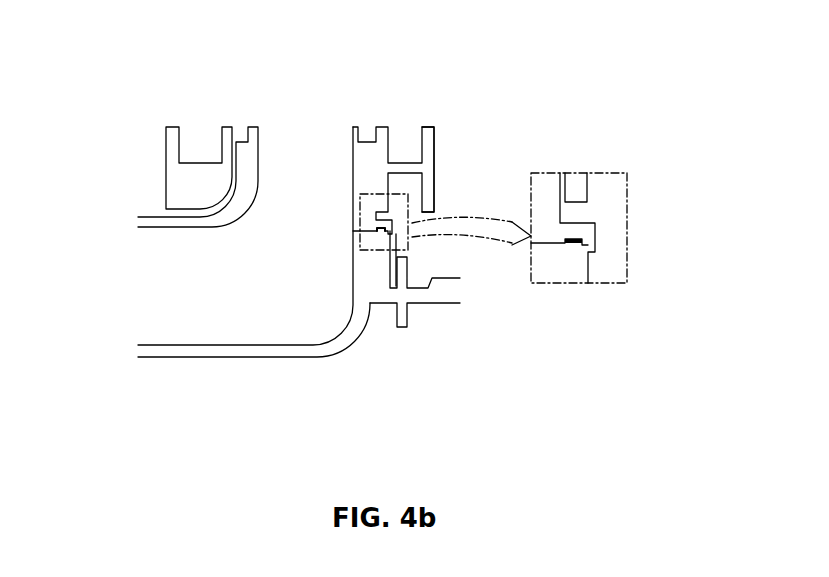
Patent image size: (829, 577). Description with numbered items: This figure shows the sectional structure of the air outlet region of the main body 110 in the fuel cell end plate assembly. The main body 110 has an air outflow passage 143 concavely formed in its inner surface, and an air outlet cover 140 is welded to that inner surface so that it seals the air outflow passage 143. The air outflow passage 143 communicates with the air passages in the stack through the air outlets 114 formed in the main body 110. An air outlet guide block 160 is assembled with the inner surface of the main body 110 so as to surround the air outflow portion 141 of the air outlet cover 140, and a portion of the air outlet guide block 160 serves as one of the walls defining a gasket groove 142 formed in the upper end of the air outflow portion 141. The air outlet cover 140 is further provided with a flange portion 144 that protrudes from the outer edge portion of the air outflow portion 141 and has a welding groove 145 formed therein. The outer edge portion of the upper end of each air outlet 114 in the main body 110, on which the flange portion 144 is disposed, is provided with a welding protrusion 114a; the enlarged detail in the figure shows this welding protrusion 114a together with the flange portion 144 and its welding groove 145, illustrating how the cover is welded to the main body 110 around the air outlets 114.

The main body 110 is at (294, 370).
The air outlets 114 is at (356, 265).
The welding protrusion 114a is at (573, 240).
The air outlet cover 140 is at (242, 228).
The air outflow portion 141 is at (250, 159).
The gasket groove 142 is at (368, 133).
The air outflow passage 143 is at (177, 281).
The flange portion 144 is at (592, 232).
The welding groove 145 is at (580, 246).
The air outlet guide block 160 is at (431, 134).